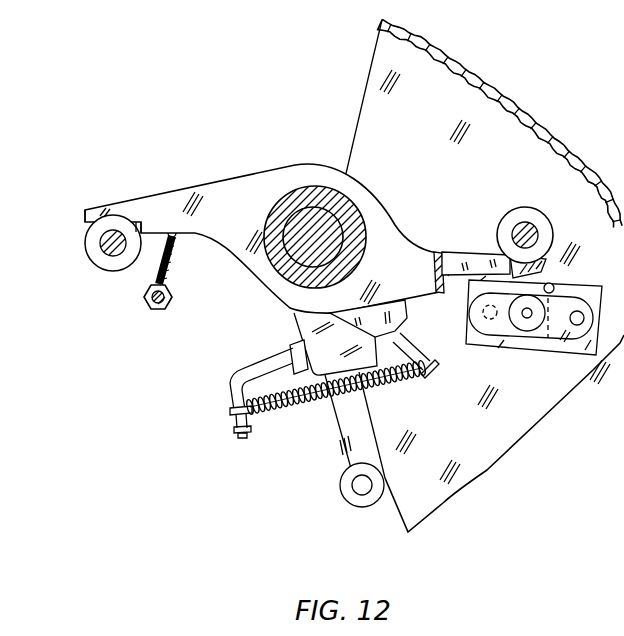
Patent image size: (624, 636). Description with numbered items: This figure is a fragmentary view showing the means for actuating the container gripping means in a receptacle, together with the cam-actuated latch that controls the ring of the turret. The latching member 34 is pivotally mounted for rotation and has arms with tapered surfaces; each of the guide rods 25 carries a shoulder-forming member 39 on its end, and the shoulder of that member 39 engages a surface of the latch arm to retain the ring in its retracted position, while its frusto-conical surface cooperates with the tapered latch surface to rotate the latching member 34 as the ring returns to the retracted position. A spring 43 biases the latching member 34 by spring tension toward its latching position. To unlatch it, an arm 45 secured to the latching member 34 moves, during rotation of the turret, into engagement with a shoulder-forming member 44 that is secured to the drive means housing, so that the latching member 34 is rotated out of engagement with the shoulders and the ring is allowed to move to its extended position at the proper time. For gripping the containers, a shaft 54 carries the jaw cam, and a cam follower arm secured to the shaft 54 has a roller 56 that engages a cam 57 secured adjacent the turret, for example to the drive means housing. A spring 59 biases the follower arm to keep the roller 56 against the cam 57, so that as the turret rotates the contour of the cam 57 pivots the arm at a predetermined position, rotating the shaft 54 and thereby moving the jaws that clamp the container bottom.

The guide rod 25 is at (100, 245).
The shoulder-forming member 39 is at (100, 270).
The spring 43 is at (173, 266).
The shaft 54 is at (279, 221).
The arm 45 is at (440, 252).
The latching member 34 is at (547, 263).
The shoulder-forming member 44 is at (530, 322).
The spring 59 is at (288, 402).
The roller 56 is at (343, 486).
The cam 57 is at (395, 505).